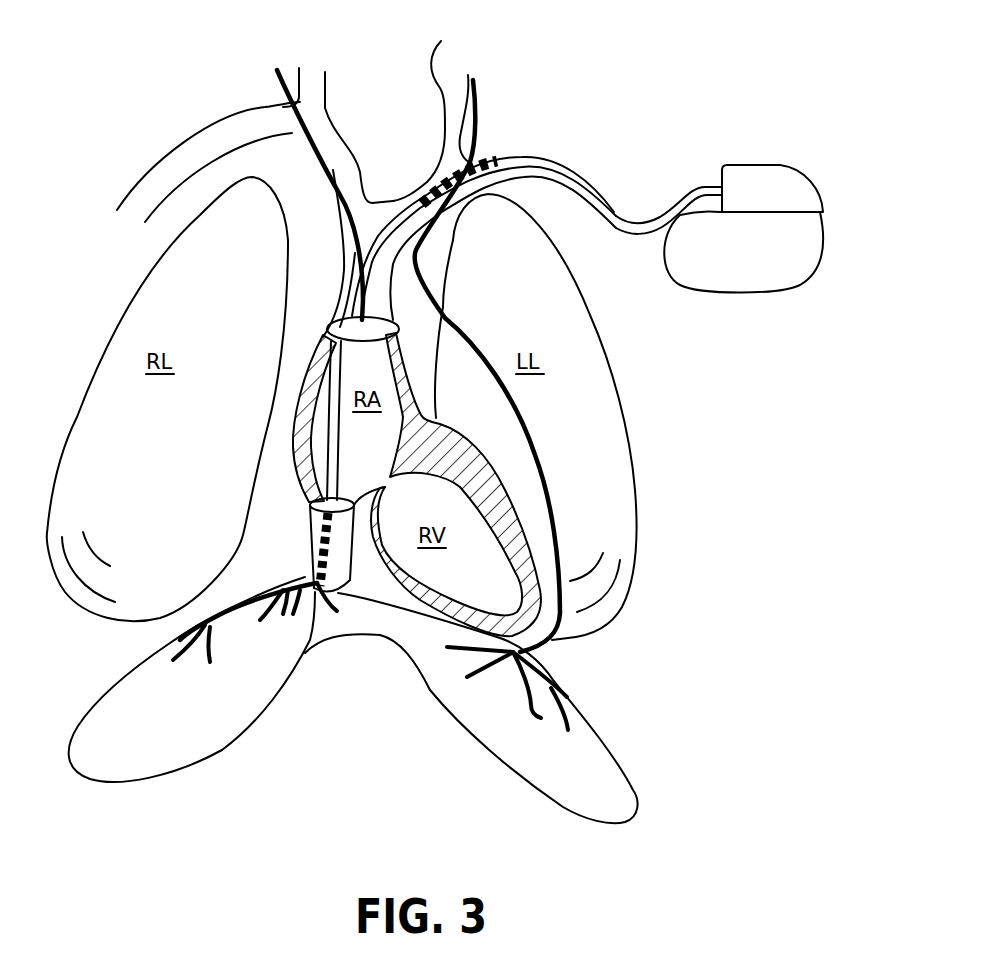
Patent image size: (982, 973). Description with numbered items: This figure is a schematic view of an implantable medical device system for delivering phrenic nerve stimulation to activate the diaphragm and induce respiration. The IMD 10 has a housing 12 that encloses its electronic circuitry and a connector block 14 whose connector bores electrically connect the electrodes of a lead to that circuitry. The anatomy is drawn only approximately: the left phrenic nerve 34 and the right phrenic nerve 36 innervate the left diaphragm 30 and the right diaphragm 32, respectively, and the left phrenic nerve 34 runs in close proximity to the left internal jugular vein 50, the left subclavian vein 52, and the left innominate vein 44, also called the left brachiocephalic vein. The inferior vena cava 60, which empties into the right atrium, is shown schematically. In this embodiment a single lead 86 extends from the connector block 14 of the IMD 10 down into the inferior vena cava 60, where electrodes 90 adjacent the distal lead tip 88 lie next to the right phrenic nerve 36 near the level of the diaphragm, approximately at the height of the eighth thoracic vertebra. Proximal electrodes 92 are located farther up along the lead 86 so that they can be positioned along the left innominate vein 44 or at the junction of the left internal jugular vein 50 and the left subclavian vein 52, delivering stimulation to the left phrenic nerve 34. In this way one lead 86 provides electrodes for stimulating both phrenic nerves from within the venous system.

The IMD 10 is at (773, 116).
The housing 12 is at (740, 293).
The connector block 14 is at (822, 200).
The left diaphragm 30 is at (603, 793).
The right diaphragm 32 is at (117, 745).
The left phrenic nerve 34 is at (477, 133).
The right phrenic nerve 36 is at (275, 81).
The left innominate vein 44 is at (390, 200).
The left internal jugular vein 50 is at (431, 109).
The left subclavian vein 52 is at (594, 192).
The inferior vena cava 60 is at (308, 530).
The lead 86 is at (658, 215).
The distal lead tip 88 is at (314, 600).
The electrodes 90 is at (313, 547).
The proximal electrodes 92 is at (440, 207).